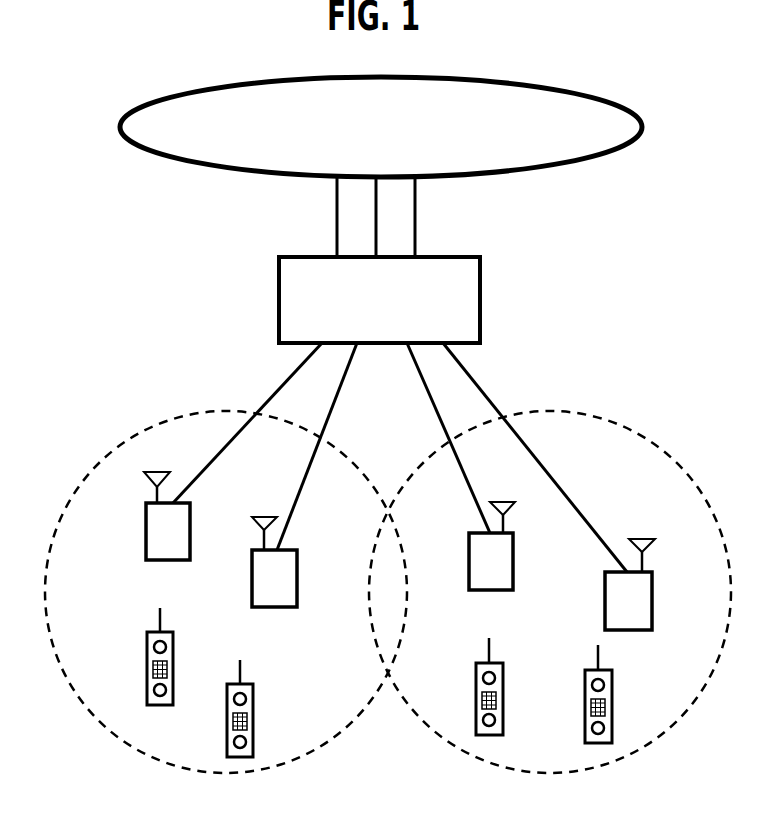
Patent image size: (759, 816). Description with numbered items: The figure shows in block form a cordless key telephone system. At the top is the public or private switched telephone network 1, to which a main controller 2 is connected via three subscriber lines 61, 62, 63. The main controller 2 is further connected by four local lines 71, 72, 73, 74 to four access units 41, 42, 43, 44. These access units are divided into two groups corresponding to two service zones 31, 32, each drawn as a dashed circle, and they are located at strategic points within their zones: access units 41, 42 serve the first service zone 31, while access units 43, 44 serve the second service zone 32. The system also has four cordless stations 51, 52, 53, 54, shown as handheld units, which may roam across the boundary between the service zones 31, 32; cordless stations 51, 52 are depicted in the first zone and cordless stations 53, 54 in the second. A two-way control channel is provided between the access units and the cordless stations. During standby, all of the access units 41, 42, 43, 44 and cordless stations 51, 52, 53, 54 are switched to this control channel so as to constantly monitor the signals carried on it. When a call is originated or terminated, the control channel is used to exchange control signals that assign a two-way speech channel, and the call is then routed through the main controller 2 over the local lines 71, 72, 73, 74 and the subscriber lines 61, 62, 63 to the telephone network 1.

The telephone network 1 is at (120, 128).
The main controller 2 is at (463, 256).
The service zone 31 is at (107, 463).
The service zone 32 is at (698, 490).
The access unit 41 is at (147, 510).
The access unit 42 is at (270, 606).
The access unit 43 is at (469, 567).
The access unit 44 is at (621, 627).
The cordless station 51 is at (254, 698).
The cordless station 52 is at (173, 644).
The cordless station 53 is at (480, 663).
The cordless station 54 is at (589, 670).
The subscriber line 61 is at (337, 240).
The subscriber line 62 is at (376, 243).
The subscriber line 63 is at (415, 243).
The local line 71 is at (272, 397).
The local line 72 is at (320, 420).
The local line 73 is at (433, 397).
The local line 74 is at (477, 392).